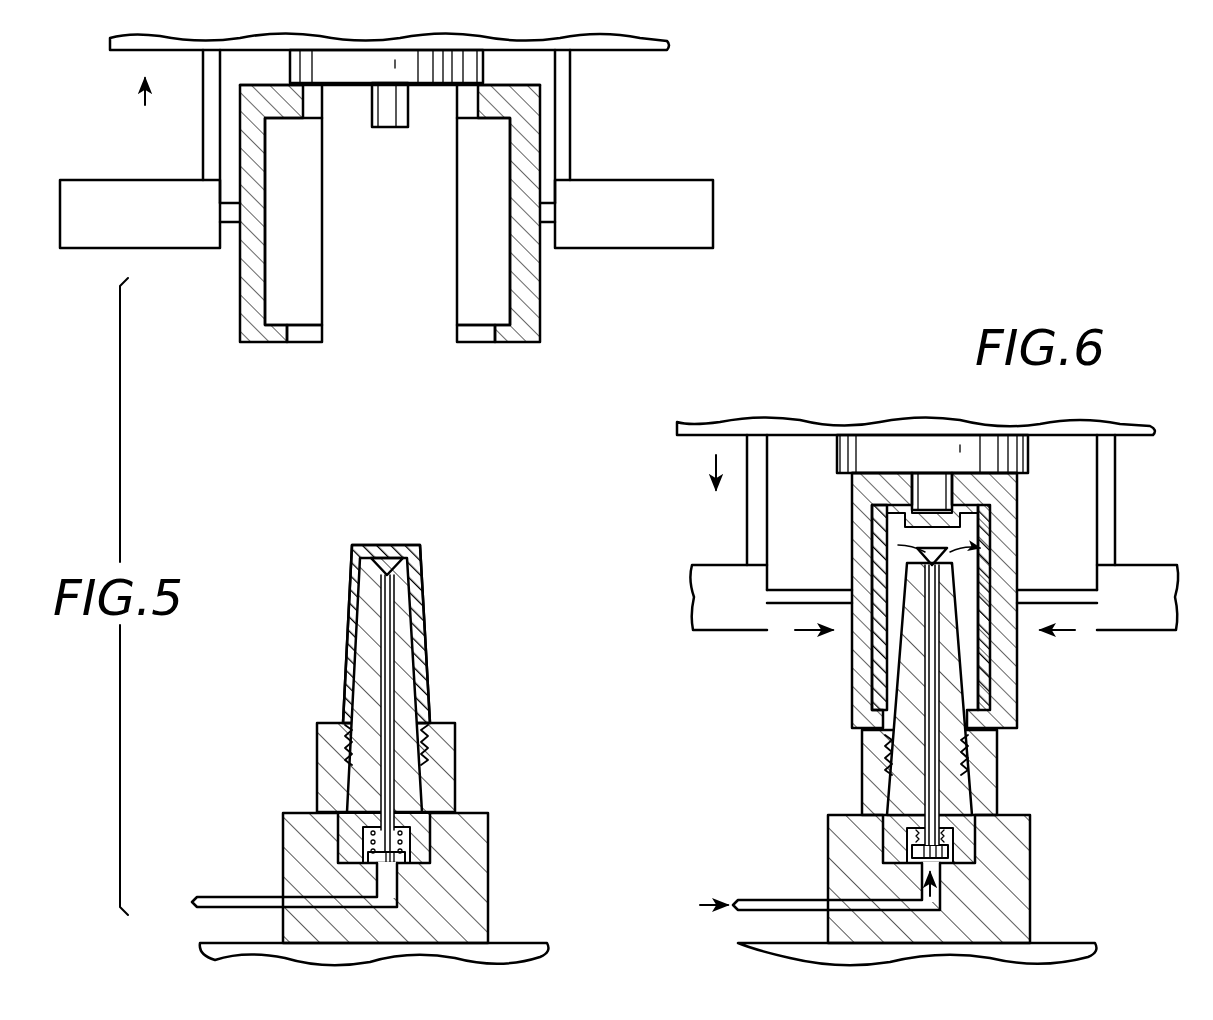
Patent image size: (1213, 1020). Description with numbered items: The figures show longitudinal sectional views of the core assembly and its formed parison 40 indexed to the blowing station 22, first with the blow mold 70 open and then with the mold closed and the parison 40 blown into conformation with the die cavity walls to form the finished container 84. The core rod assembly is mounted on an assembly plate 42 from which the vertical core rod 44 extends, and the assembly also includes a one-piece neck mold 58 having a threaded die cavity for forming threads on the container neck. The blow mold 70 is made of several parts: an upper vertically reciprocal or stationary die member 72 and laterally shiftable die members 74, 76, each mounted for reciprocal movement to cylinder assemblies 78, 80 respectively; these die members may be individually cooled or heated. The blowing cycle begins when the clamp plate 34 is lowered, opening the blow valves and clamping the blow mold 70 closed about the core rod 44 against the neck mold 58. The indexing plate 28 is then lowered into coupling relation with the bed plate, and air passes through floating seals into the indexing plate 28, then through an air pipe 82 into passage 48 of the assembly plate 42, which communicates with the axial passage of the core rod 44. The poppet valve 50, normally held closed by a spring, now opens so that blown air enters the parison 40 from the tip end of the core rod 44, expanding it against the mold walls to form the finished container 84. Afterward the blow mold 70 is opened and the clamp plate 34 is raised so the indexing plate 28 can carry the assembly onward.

In FIG. 5, the blowing station 22 is at (584, 157).
In FIG. 5, the indexing plate 28 is at (558, 912).
In FIG. 6, the indexing plate 28 is at (1088, 912).
In FIG. 5, the clamp plate 34 is at (622, 43).
In FIG. 6, the clamp plate 34 is at (1140, 432).
In FIG. 5, the parison 40 is at (424, 611).
In FIG. 6, the parison 40 is at (976, 685).
In FIG. 5, the assembly plate 42 is at (490, 866).
In FIG. 6, the assembly plate 42 is at (1030, 856).
In FIG. 5, the core rod 44 is at (346, 673).
In FIG. 6, the core rod 44 is at (955, 798).
In FIG. 6, the passage 48 is at (845, 905).
In FIG. 6, the poppet valve 50 is at (945, 545).
In FIG. 5, the neck mold 58 is at (458, 769).
In FIG. 6, the neck mold 58 is at (992, 760).
In FIG. 5, the blow mold 70 is at (386, 220).
In FIG. 6, the blow mold 70 is at (925, 609).
In FIG. 5, the upper die member 72 is at (428, 75).
In FIG. 6, the upper die member 72 is at (1023, 460).
In FIG. 5, the laterally shiftable die member 74 is at (240, 265).
In FIG. 6, the laterally shiftable die member 74 is at (850, 662).
In FIG. 5, the laterally shiftable die member 76 is at (540, 331).
In FIG. 6, the laterally shiftable die member 76 is at (1005, 685).
In FIG. 5, the cylinder assembly 78 is at (112, 255).
In FIG. 6, the cylinder assembly 78 is at (737, 633).
In FIG. 5, the cylinder assembly 80 is at (640, 252).
In FIG. 6, the cylinder assembly 80 is at (1145, 633).
In FIG. 6, the air pipe 82 is at (798, 877).
In FIG. 6, the finished container 84 is at (992, 560).